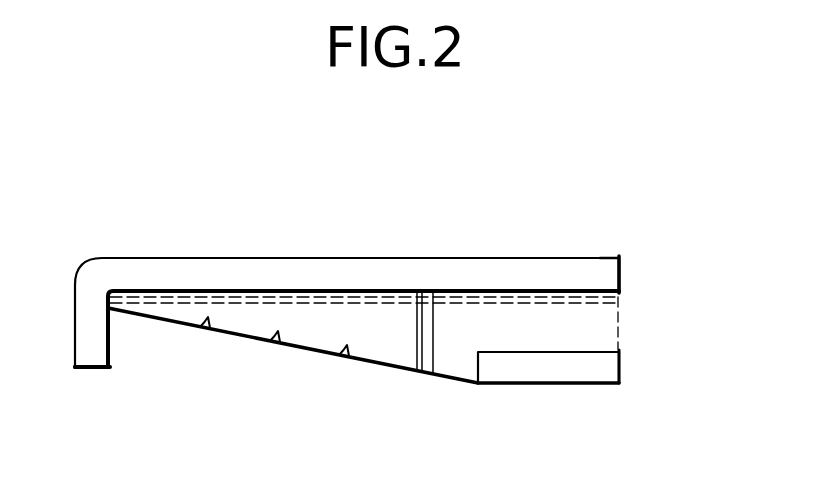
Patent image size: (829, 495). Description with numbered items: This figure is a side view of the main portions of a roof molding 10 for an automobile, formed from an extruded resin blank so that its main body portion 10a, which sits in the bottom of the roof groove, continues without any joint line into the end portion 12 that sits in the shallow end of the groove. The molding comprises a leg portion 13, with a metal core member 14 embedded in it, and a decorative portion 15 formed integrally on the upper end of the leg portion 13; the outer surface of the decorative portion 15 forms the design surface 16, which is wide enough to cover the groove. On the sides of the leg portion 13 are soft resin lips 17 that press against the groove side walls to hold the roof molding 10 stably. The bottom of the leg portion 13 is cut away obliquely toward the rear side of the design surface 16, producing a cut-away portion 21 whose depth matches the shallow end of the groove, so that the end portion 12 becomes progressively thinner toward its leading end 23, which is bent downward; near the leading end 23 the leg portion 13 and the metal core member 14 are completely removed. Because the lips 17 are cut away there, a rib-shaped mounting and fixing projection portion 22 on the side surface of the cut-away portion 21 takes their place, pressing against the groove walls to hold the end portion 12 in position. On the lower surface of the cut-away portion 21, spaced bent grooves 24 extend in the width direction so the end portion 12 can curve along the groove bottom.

The roof molding 10 is at (572, 257).
The main body portion 10a is at (621, 262).
The end portion 12 is at (148, 257).
The leg portion 13 is at (604, 327).
The metal core member 14 is at (620, 300).
The decorative portion 15 is at (477, 257).
The design surface 16 is at (311, 257).
The lips 17 is at (547, 370).
The cut-away portion 21 is at (303, 352).
The mounting and fixing projection portion 22 is at (430, 377).
The leading end 23 is at (92, 370).
The bent grooves 24 is at (281, 341).